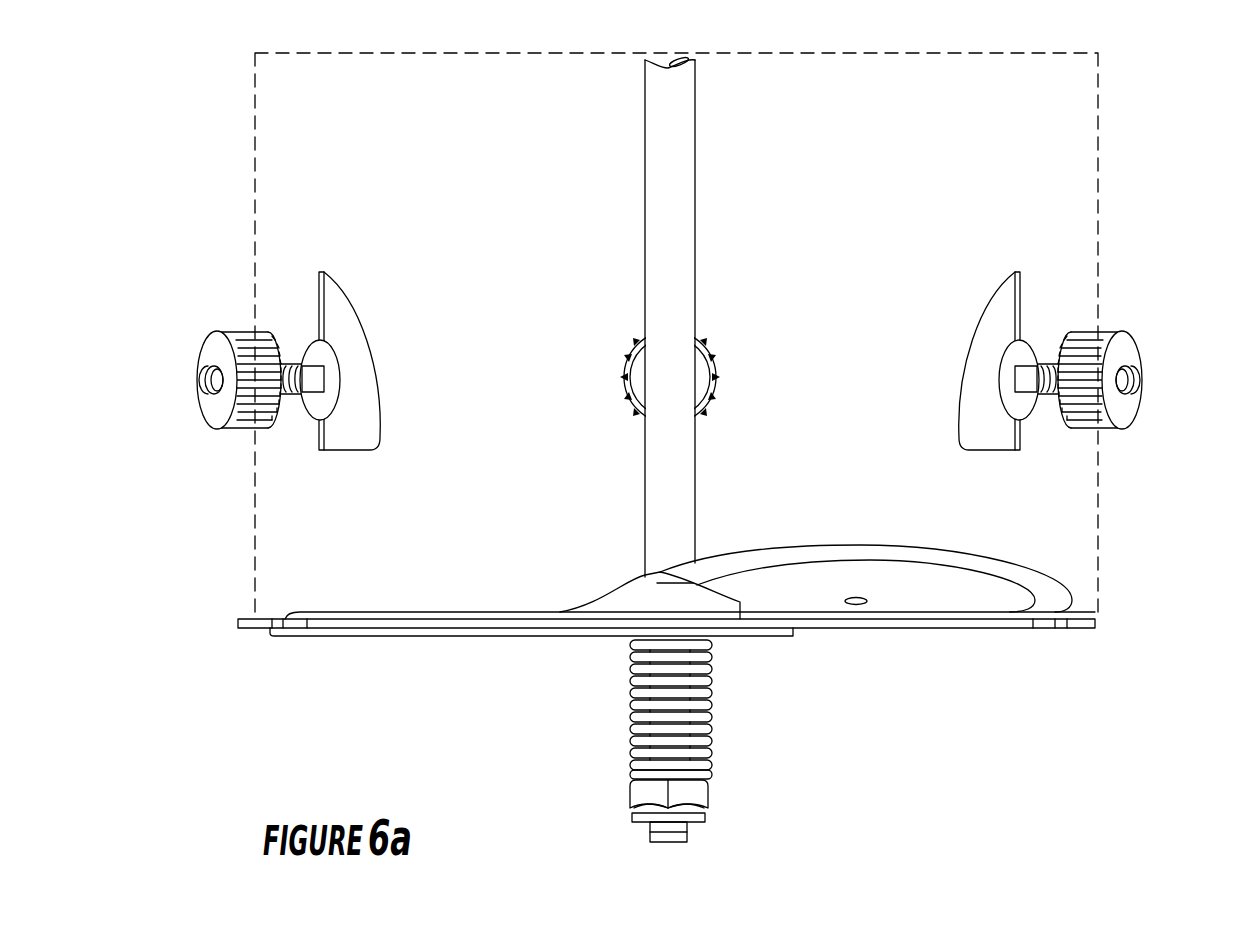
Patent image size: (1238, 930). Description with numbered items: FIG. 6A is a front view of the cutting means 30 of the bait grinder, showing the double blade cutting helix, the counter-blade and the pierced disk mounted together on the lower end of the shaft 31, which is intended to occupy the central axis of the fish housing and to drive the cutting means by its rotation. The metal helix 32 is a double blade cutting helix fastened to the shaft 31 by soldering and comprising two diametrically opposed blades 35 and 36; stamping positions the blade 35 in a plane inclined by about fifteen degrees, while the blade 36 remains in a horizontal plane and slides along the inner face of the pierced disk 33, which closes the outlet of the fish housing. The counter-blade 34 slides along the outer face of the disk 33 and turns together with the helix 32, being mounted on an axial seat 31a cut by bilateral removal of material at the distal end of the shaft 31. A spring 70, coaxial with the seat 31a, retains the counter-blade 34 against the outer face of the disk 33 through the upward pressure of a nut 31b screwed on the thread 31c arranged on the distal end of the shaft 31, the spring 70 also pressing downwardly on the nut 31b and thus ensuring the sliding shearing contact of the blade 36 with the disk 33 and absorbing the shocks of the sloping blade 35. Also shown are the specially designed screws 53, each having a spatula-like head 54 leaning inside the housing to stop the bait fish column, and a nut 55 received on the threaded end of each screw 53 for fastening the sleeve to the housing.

The cutting means 30 is at (754, 509).
The shaft 31 is at (677, 162).
The axial seat 31a is at (708, 775).
The nut 31b is at (645, 793).
The thread 31c is at (667, 832).
The helix 32 is at (635, 575).
The pierced disk 33 is at (1102, 620).
The counter-blade 34 is at (267, 633).
The blade 35 is at (932, 592).
The blade 36 is at (420, 612).
The screw 53 is at (291, 318).
The head 54 is at (362, 366).
The nut 55 is at (213, 405).
The spring 70 is at (614, 722).